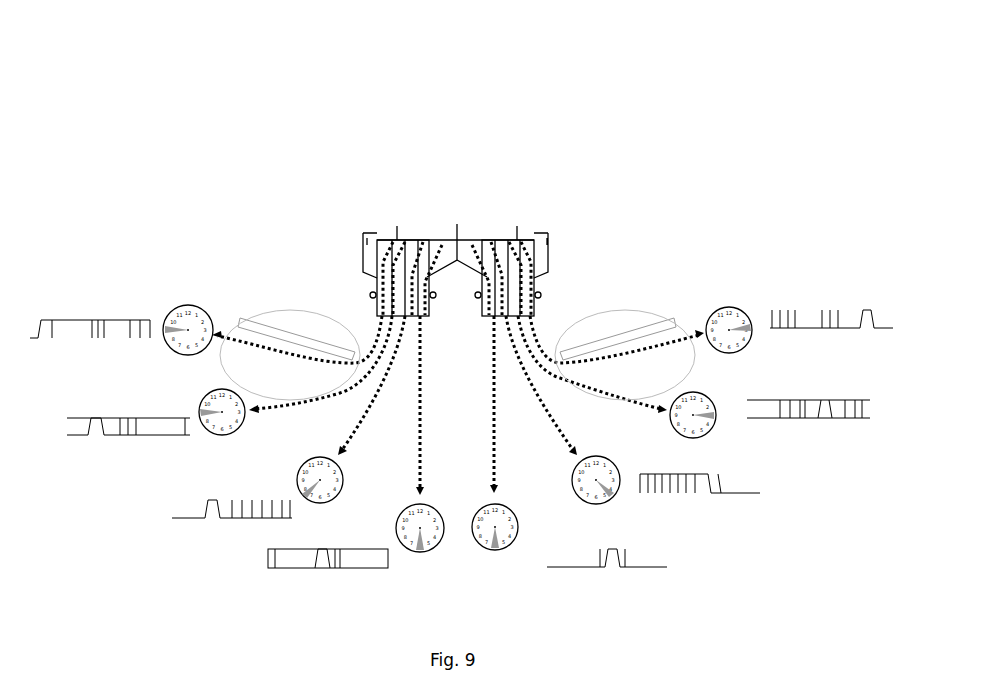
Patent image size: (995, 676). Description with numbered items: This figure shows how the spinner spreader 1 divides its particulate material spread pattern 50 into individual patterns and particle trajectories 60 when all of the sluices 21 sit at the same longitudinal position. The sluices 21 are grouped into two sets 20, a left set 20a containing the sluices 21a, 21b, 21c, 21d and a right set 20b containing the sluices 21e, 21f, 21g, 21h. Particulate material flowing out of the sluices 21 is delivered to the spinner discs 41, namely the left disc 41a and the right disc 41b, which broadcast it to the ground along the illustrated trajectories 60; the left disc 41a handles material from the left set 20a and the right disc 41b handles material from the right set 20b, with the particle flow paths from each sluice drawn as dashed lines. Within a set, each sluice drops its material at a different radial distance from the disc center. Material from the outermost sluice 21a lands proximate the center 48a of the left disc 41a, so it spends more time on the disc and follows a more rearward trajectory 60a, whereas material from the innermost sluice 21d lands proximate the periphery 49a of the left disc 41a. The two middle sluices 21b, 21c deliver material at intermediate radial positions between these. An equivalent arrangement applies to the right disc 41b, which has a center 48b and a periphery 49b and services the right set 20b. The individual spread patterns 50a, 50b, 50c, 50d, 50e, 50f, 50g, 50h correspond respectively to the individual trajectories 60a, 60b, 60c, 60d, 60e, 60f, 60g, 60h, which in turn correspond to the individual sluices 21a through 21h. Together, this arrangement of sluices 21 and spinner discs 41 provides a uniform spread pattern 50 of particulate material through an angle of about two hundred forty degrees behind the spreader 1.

The spinner spreader 1 is at (778, 205).
The sets of sluices 20 is at (455, 270).
The left set of sluices 20a is at (375, 255).
The right set of sluices 20b is at (536, 256).
The sluices 21 is at (453, 163).
The outermost sluice of left set 21a is at (382, 246).
The middle sluice of left set 21b is at (388, 240).
The middle sluice of left set 21c is at (397, 240).
The innermost sluice of left set 21d is at (406, 240).
The sluice of right set 21e is at (493, 240).
The sluice of right set 21f is at (506, 240).
The sluice of right set 21g is at (517, 240).
The sluice of right set 21h is at (524, 246).
The spinner discs 41 is at (457, 327).
The left disc 41a is at (292, 325).
The right disc 41b is at (626, 328).
The center of left disc 48a is at (332, 322).
The center of right disc 48b is at (588, 322).
The periphery of left disc 49a is at (426, 371).
The periphery of right disc 49b is at (524, 393).
The particulate material spread pattern 50 is at (462, 421).
The particle spread pattern from sluice 21a 50a is at (72, 317).
The particle spread pattern from sluice 21b 50b is at (117, 417).
The particle spread pattern from sluice 21c 50c is at (198, 498).
The particle spread pattern from sluice 21d 50d is at (270, 548).
The particle spread pattern from sluice 21e 50e is at (620, 547).
The particle spread pattern from sluice 21f 50f is at (708, 472).
The particle spread pattern from sluice 21g 50g is at (820, 398).
The particle spread pattern from sluice 21h 50h is at (857, 308).
The particle trajectories 60 is at (455, 413).
The trajectory from sluice 21a 60a is at (192, 306).
The trajectory from sluice 21b 60b is at (214, 390).
The trajectory from sluice 21c 60c is at (298, 464).
The trajectory from sluice 21d 60d is at (397, 521).
The trajectory from sluice 21e 60e is at (518, 520).
The trajectory from sluice 21f 60f is at (597, 455).
The trajectory from sluice 21g 60g is at (690, 392).
The trajectory from sluice 21h 60h is at (725, 304).